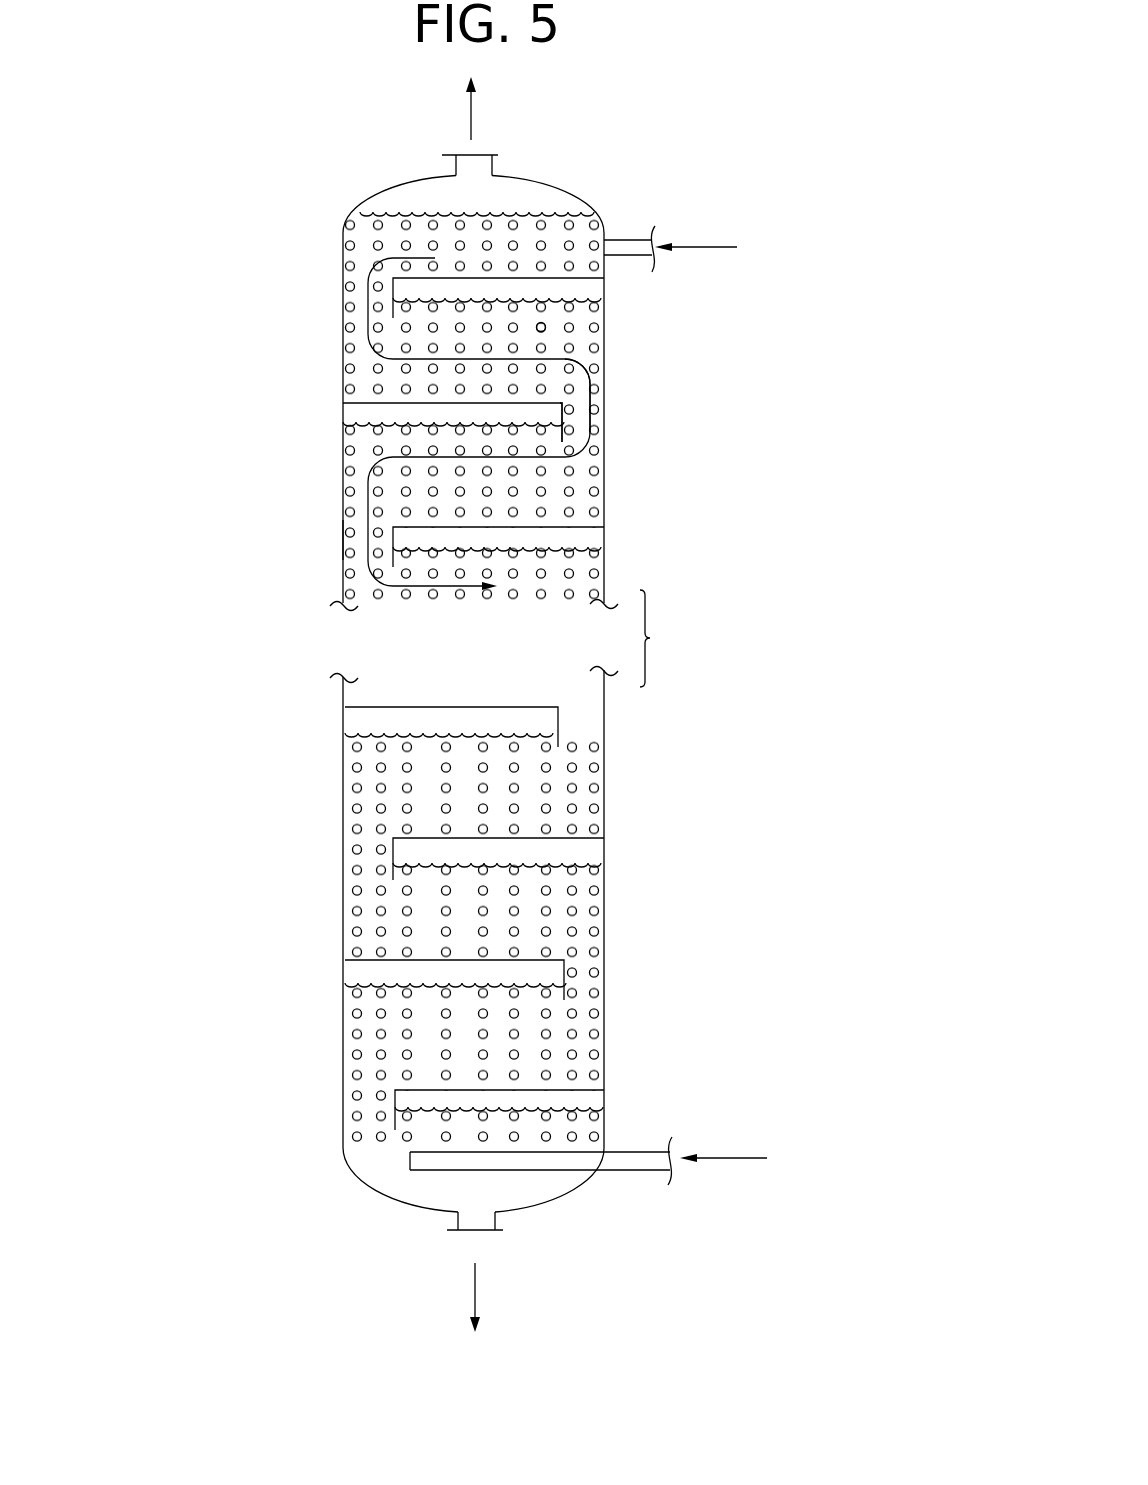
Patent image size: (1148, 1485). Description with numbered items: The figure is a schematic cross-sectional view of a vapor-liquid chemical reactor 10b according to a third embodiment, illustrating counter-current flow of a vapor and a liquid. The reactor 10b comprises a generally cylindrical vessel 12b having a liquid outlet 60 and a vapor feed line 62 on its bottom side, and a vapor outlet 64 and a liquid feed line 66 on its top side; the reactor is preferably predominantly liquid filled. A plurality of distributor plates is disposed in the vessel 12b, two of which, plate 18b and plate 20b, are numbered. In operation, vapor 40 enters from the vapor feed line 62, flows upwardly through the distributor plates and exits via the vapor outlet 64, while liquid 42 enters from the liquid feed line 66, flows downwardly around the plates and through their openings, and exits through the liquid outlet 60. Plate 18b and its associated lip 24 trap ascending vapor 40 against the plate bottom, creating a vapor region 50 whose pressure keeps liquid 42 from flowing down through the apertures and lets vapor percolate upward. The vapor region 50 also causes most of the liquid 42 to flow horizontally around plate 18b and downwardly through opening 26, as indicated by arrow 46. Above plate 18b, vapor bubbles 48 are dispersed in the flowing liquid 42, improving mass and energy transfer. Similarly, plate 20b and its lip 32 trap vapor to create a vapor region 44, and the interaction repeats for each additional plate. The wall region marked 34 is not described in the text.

The reactor 10b is at (683, 635).
The vessel 12b is at (604, 948).
The plate 18b is at (383, 402).
The plate 20b is at (572, 523).
The lip 24 is at (565, 443).
The opening 26 is at (600, 400).
The lip 32 is at (377, 563).
The vessel wall 34 is at (360, 540).
The vapor 40 is at (740, 1158).
The liquid 42 is at (714, 248).
The vapor region 44 is at (597, 530).
The arrow 46 is at (603, 362).
The vapor bubbles 48 is at (541, 327).
The vapor region 50 is at (360, 412).
The liquid outlet 60 is at (473, 1230).
The vapor feed line 62 is at (630, 1170).
The vapor outlet 64 is at (478, 153).
The liquid feed line 66 is at (623, 238).